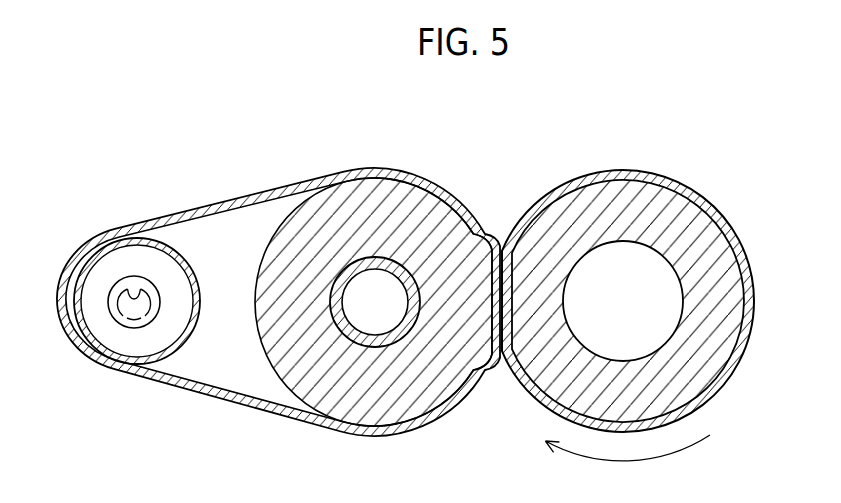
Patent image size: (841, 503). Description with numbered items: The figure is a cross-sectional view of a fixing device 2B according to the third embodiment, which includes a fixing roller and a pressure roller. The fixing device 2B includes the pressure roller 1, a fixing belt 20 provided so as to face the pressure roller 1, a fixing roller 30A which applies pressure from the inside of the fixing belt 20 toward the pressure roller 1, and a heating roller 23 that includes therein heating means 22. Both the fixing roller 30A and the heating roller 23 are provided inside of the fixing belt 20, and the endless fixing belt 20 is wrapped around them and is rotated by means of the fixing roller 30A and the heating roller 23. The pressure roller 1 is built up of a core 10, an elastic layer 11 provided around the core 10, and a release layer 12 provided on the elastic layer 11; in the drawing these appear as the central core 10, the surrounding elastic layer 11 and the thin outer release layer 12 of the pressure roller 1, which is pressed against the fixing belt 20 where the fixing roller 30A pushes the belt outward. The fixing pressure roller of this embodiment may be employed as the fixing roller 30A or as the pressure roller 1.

The pressure roller 1 is at (745, 399).
The core 10 is at (657, 305).
The elastic layer 11 is at (700, 272).
The release layer 12 is at (706, 213).
The fixing device 2B is at (738, 117).
The fixing belt 20 is at (107, 375).
The heating means 22 is at (107, 307).
The heating roller 23 is at (160, 370).
The fixing roller 30A is at (447, 230).